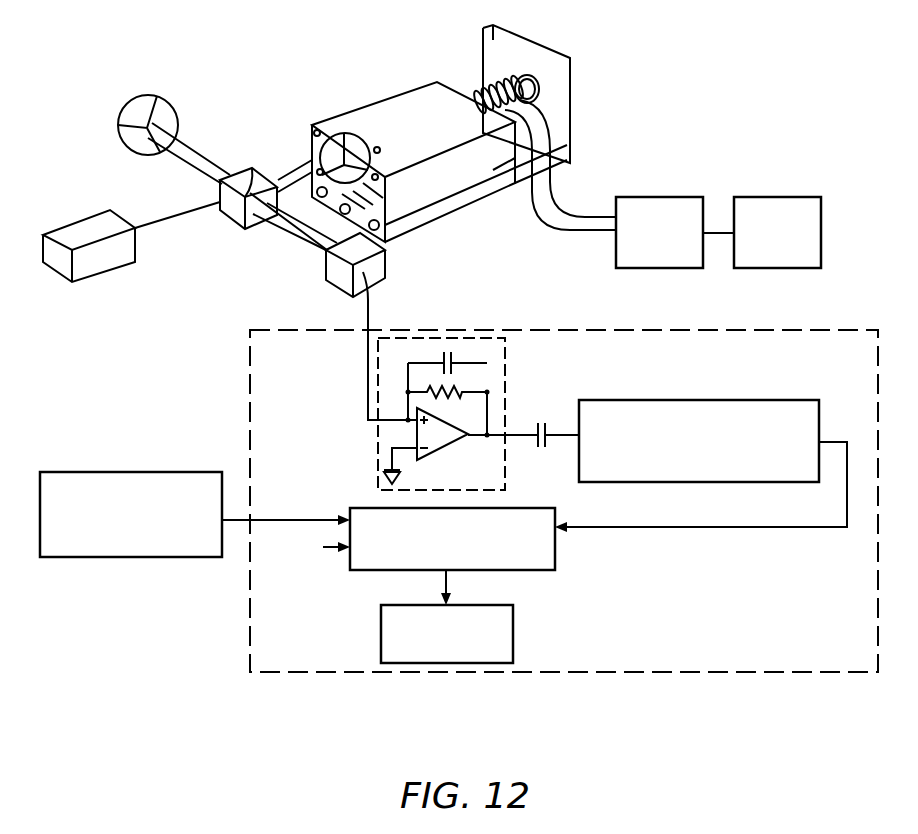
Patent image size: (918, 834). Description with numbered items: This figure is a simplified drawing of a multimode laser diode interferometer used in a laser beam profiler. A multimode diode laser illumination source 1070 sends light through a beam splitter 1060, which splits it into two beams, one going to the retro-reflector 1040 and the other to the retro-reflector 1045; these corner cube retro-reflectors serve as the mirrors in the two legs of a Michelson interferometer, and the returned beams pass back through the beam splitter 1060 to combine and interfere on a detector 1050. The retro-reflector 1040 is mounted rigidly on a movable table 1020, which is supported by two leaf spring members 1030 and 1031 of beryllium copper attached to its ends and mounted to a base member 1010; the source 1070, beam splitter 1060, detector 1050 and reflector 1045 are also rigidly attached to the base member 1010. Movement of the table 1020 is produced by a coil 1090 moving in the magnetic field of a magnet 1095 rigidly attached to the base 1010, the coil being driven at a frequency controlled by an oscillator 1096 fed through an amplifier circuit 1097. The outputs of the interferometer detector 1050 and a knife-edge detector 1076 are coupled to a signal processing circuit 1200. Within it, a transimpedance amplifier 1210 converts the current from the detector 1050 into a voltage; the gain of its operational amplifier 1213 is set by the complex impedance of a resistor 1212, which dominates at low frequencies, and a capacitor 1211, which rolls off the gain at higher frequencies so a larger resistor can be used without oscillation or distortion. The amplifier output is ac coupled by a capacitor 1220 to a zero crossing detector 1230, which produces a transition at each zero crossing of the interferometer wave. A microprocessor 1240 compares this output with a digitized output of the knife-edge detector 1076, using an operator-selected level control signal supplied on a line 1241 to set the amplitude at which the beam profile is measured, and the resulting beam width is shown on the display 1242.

The base member 1010 is at (505, 193).
The movable table 1020 is at (382, 100).
The leaf spring member 1030 is at (388, 218).
The leaf spring member 1031 is at (497, 172).
The retro-reflector 1040 is at (343, 137).
The retro-reflector 1045 is at (153, 97).
The detector 1050 is at (332, 284).
The beam splitter 1060 is at (243, 172).
The multimode diode laser illumination source 1070 is at (93, 277).
The knife-edge detector 1076 is at (122, 472).
The coil 1090 is at (483, 90).
The magnet 1095 is at (540, 93).
The oscillator 1096 is at (790, 268).
The amplifier circuit 1097 is at (667, 268).
The signal processing circuit 1200 is at (240, 619).
The transimpedance amplifier 1210 is at (370, 462).
The capacitor 1211 is at (453, 360).
The resistor 1212 is at (430, 390).
The operational amplifier 1213 is at (437, 440).
The capacitor 1220 is at (545, 412).
The zero crossing detector 1230 is at (712, 400).
The microprocessor 1240 is at (555, 553).
The line 1241 is at (323, 547).
The display 1242 is at (513, 632).